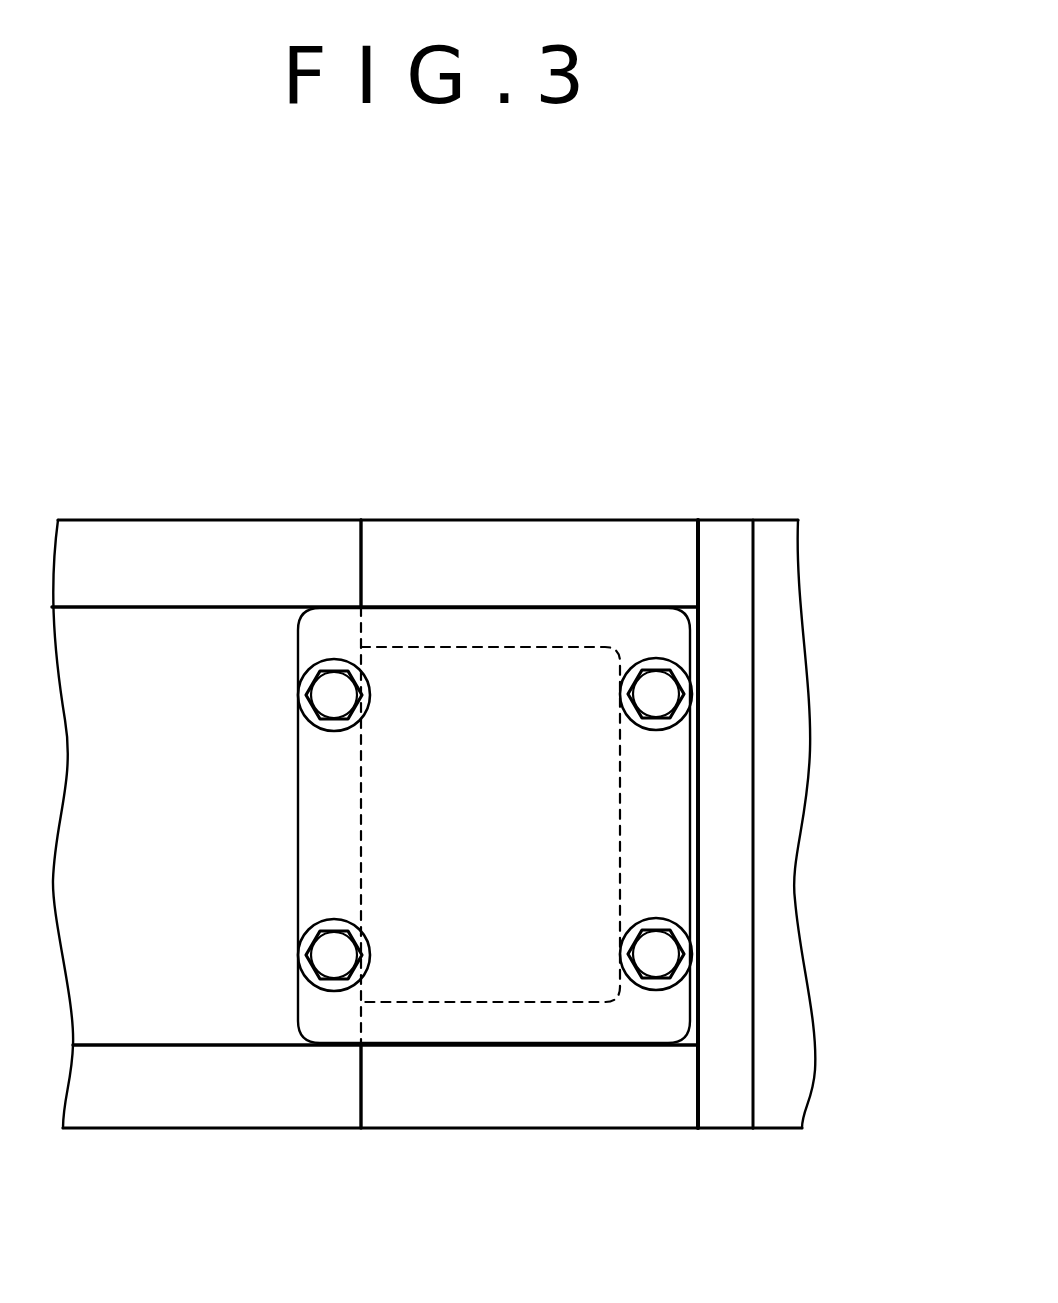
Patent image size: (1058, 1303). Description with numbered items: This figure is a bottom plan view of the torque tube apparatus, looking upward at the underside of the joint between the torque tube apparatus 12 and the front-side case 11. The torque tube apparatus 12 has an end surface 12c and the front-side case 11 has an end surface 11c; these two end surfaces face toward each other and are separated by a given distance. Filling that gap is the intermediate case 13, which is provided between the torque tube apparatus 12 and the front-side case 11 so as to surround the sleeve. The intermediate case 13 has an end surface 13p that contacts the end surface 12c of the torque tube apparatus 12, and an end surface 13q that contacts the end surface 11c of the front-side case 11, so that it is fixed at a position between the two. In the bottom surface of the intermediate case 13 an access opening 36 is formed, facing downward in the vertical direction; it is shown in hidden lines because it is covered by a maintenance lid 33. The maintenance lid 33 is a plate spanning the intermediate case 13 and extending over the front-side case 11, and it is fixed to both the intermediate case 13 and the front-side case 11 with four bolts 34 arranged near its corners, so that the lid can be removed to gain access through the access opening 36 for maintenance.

The front-side case 11 is at (216, 555).
The end surface of the front-side case 11c is at (366, 557).
The torque tube apparatus 12 is at (742, 1095).
The end surface of the torque tube apparatus 12c is at (695, 556).
The intermediate case 13 is at (538, 1100).
The end surface of the intermediate case 13p is at (702, 1093).
The end surface of the intermediate case 13q is at (365, 1092).
The maintenance lid 33 is at (482, 697).
The bolt 34 is at (660, 692).
The access opening 36 is at (622, 832).